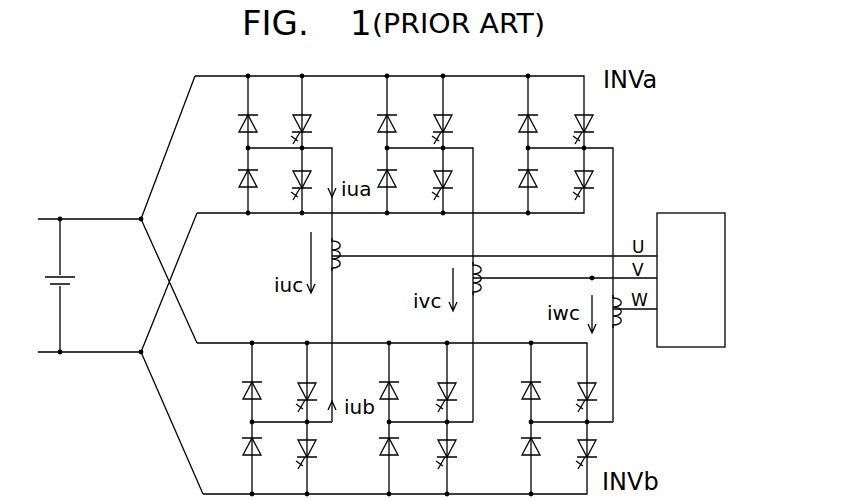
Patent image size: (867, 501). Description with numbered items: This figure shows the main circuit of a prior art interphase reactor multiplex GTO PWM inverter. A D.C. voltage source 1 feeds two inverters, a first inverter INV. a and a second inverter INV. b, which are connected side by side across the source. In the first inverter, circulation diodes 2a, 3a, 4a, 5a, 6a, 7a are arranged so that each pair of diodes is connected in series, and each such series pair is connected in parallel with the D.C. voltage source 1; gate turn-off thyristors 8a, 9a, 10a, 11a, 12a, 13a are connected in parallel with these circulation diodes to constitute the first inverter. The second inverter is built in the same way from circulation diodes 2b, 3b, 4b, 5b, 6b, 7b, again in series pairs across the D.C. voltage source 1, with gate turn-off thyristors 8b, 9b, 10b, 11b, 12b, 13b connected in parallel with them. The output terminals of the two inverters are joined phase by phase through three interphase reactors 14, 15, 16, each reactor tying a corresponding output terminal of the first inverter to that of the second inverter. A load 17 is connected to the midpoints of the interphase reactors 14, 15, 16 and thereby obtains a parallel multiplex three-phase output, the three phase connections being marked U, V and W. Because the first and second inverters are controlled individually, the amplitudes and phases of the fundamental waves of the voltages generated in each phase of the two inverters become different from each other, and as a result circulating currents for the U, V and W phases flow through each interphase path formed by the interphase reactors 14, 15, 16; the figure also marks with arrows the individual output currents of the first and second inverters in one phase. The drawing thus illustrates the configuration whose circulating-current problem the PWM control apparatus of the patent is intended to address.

The D.C. voltage source 1 is at (63, 275).
The circulation diode 2a is at (238, 125).
The circulation diode 3a is at (238, 179).
The circulation diode 4a is at (377, 123).
The circulation diode 5a is at (376, 182).
The circulation diode 6a is at (515, 123).
The circulation diode 7a is at (515, 183).
The GTO (gate turn-off thyristor) 8a is at (293, 122).
The GTO (gate turn-off thyristor) 9a is at (293, 181).
The GTO (gate turn-off thyristor) 10a is at (434, 123).
The GTO (gate turn-off thyristor) 11a is at (434, 183).
The GTO (gate turn-off thyristor) 12a is at (574, 123).
The GTO (gate turn-off thyristor) 13a is at (575, 183).
The circulation diode 2b is at (244, 390).
The circulation diode 3b is at (244, 446).
The circulation diode 4b is at (378, 392).
The circulation diode 5b is at (378, 450).
The circulation diode 6b is at (522, 392).
The circulation diode 7b is at (521, 450).
The GTO (gate turn-off thyristor) 8b is at (300, 390).
The GTO (gate turn-off thyristor) 9b is at (299, 455).
The GTO (gate turn-off thyristor) 10b is at (438, 392).
The GTO (gate turn-off thyristor) 11b is at (441, 456).
The GTO (gate turn-off thyristor) 12b is at (579, 392).
The GTO (gate turn-off thyristor) 13b is at (581, 456).
The interphase reactor 14 is at (336, 268).
The interphase reactor 15 is at (477, 290).
The interphase reactor 16 is at (617, 323).
The load 17 is at (680, 213).